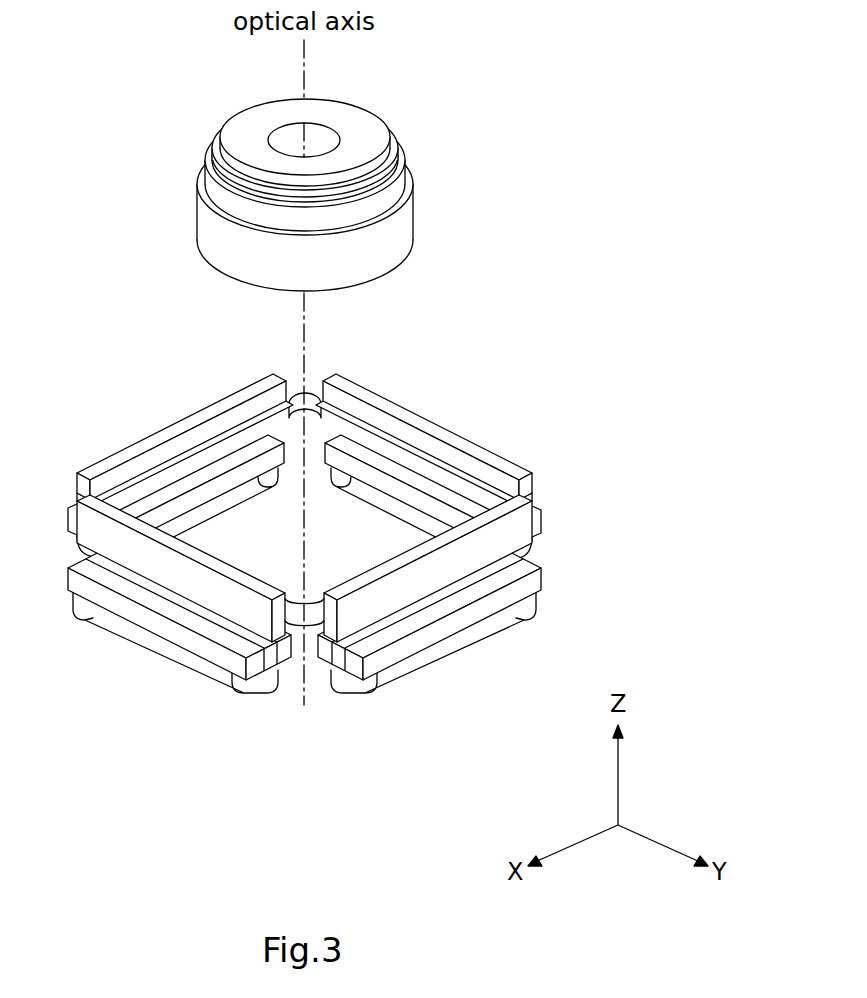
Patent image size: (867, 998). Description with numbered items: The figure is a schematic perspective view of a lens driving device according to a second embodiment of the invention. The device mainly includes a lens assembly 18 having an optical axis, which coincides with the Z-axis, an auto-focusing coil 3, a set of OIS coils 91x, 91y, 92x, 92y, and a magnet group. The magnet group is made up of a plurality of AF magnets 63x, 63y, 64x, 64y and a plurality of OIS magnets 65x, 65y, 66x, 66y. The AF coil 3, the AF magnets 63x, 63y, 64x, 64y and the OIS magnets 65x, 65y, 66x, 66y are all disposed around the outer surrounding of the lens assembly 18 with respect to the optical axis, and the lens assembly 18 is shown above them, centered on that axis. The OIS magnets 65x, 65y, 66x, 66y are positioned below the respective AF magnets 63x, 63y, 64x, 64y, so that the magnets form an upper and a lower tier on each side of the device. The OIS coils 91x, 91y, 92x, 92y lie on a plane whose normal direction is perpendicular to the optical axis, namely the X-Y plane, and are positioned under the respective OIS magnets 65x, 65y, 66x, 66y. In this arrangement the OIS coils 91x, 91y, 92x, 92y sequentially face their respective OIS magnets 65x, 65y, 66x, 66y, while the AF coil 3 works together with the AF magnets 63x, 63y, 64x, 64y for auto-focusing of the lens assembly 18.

The lens assembly 18 is at (402, 228).
The auto-focusing coil 3 is at (341, 527).
The AF magnet 64x is at (180, 427).
The AF magnet 64y is at (438, 430).
The OIS magnet 66x is at (238, 463).
The OIS magnet 66y is at (417, 492).
The OIS coil 92x is at (200, 513).
The OIS coil 92y is at (415, 518).
The AF magnet 63x is at (518, 523).
The AF magnet 63y is at (288, 623).
The OIS magnet 65x is at (525, 582).
The OIS magnet 65y is at (242, 673).
The OIS coil 91x is at (452, 645).
The OIS coil 91y is at (147, 642).